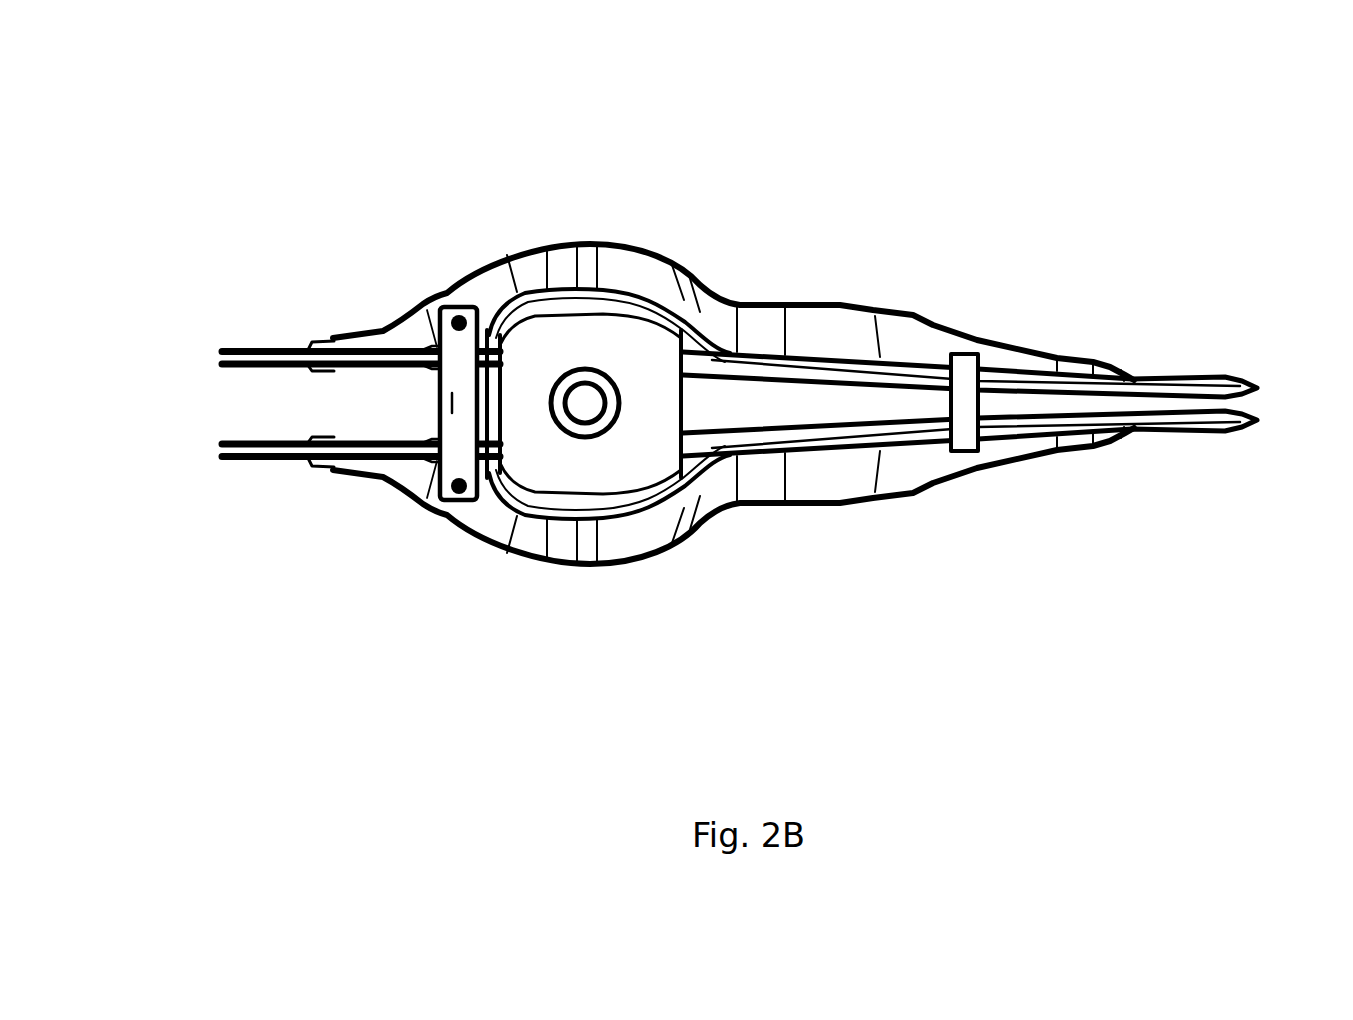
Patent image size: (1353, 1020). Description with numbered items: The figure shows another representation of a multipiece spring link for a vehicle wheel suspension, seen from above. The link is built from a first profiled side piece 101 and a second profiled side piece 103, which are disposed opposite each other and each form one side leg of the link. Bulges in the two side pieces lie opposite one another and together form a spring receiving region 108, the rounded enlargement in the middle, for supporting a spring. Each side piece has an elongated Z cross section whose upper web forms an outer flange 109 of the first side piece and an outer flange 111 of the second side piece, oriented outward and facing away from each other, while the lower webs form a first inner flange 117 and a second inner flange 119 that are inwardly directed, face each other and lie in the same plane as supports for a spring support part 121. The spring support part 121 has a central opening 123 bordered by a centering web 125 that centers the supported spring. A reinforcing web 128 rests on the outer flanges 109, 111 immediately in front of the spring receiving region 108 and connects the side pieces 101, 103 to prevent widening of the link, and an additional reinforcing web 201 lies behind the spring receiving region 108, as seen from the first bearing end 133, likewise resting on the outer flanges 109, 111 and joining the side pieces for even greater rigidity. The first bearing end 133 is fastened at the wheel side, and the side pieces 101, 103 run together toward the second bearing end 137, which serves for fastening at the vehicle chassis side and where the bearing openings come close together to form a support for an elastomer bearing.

The first profiled side piece 101 is at (242, 350).
The second profiled side piece 103 is at (268, 460).
The spring receiving region 108 is at (516, 345).
The outer flange 109 is at (845, 337).
The outer flange 111 is at (827, 473).
The first inner flange 117 is at (921, 377).
The second inner flange 119 is at (917, 447).
The spring support part 121 is at (550, 467).
The central opening 123 is at (584, 405).
The centering web 125 is at (601, 436).
The reinforcing web 128 is at (436, 488).
The additional reinforcing web 201 is at (966, 403).
The first bearing end 133 is at (205, 405).
The second bearing end 137 is at (1270, 410).